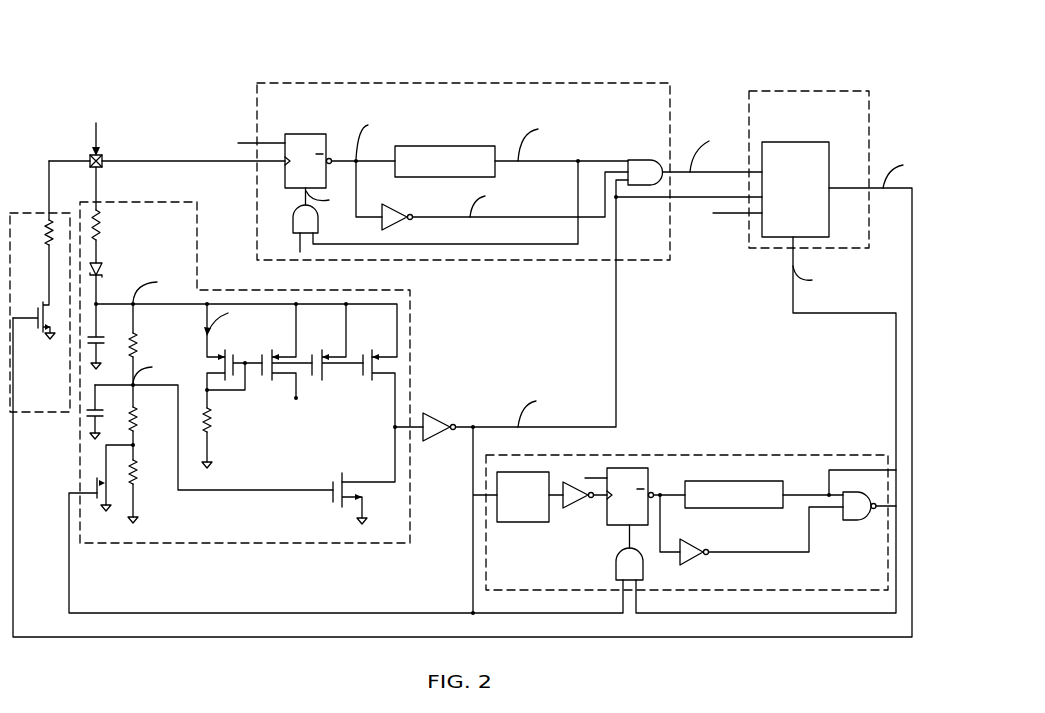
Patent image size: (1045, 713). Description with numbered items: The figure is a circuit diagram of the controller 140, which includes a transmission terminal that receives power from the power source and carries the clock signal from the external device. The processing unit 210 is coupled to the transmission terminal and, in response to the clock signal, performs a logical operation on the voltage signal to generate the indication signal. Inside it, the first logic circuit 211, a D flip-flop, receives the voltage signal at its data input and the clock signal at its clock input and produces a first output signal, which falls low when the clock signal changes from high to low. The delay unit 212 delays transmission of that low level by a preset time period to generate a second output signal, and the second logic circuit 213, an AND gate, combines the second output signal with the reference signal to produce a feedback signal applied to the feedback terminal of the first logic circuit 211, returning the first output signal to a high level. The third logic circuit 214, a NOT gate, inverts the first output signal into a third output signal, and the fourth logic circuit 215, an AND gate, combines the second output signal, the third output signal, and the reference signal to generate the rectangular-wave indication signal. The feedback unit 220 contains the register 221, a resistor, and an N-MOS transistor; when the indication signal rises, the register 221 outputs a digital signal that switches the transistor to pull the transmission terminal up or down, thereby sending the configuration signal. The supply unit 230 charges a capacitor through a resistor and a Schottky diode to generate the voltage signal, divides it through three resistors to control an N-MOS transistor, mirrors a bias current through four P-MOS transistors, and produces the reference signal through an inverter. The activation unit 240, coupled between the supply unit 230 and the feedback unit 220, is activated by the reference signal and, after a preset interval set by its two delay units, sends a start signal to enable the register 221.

The controller 140 is at (111, 79).
The processing unit 210 is at (445, 83).
The first logic circuit 211 is at (300, 134).
The delay unit 212 is at (435, 146).
The second logic circuit 213 is at (318, 221).
The third logic circuit 214 is at (397, 205).
The fourth logic circuit 215 is at (646, 159).
The feedback unit 220 is at (27, 412).
The register 221 is at (828, 167).
The supply unit 230 is at (410, 373).
The activation unit 240 is at (757, 455).